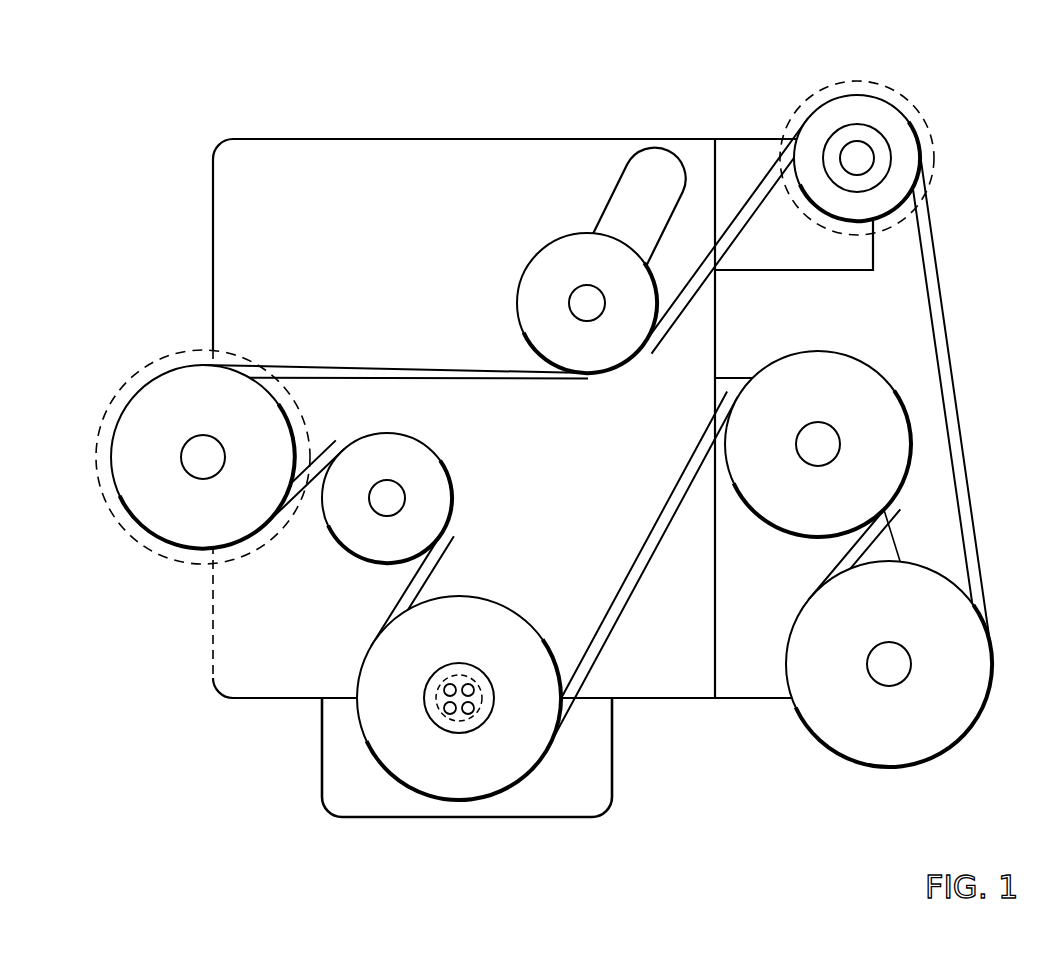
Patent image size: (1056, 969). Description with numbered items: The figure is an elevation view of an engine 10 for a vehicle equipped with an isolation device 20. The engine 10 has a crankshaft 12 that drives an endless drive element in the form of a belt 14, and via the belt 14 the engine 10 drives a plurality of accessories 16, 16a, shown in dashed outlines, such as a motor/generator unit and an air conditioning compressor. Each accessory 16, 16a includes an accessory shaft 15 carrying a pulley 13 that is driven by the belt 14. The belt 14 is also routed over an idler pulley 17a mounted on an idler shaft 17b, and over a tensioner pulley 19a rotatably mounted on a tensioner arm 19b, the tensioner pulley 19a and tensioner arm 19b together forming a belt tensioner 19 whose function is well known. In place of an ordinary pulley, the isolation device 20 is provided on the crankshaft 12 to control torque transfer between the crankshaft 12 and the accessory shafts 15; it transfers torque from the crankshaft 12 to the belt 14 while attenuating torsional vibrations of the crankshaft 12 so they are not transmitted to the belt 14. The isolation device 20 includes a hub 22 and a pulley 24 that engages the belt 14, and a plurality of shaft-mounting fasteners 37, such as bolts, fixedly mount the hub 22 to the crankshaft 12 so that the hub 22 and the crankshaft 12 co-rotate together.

The engine 10 is at (170, 85).
The crankshaft 12 is at (456, 722).
The pulley 13 is at (893, 190).
The belt 14 is at (613, 645).
The accessory shaft 15 is at (866, 157).
The accessory 16 is at (140, 368).
The accessory 16a is at (908, 100).
The idler pulley 17a is at (355, 525).
The idler shaft 17b is at (377, 497).
The belt tensioner 19 is at (532, 200).
The tensioner pulley 19a is at (540, 258).
The tensioner arm 19b is at (628, 209).
The isolation device 20 is at (365, 782).
The hub 22 is at (482, 718).
The pulley 24 is at (375, 720).
The shaft-mounting fasteners 37 is at (474, 708).